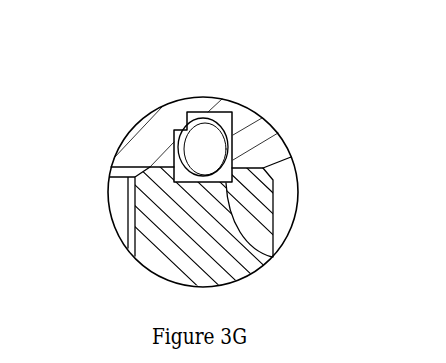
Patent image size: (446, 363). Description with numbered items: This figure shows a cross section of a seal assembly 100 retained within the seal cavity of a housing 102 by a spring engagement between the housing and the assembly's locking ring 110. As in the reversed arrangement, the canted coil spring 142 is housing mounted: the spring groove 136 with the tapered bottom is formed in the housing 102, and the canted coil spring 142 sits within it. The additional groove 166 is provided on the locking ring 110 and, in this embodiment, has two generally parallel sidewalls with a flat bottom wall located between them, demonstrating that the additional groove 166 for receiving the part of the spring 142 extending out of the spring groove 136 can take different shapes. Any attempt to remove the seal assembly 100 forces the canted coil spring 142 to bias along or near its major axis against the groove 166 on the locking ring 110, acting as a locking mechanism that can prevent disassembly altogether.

The seal assembly 100 is at (326, 182).
The housing 102 is at (152, 136).
The locking ring 110 is at (172, 252).
The spring groove 136 is at (176, 131).
The canted coil spring 142 is at (218, 152).
The additional groove 166 is at (272, 257).